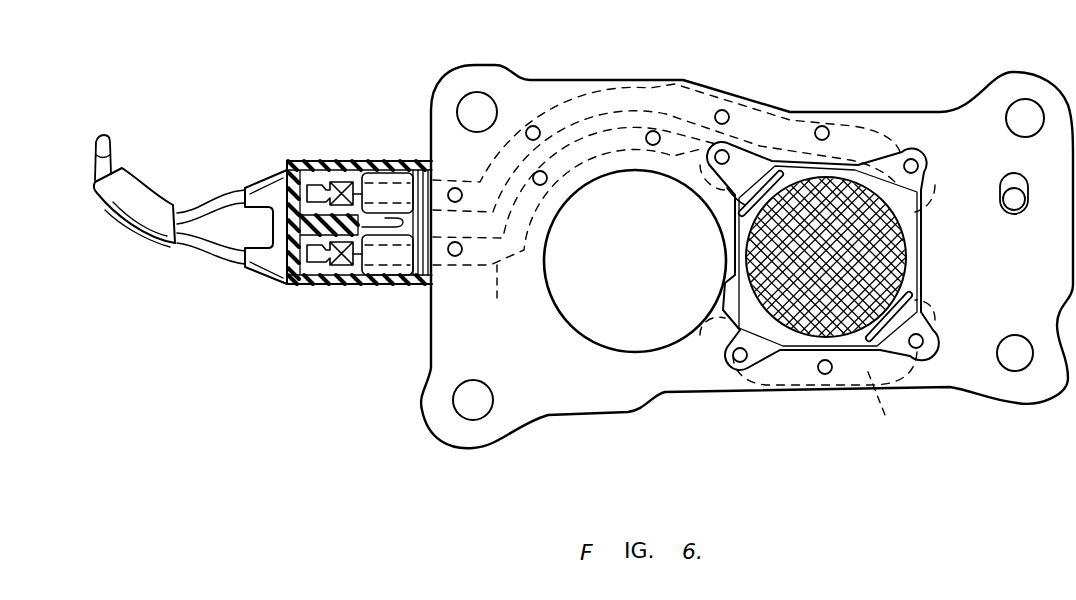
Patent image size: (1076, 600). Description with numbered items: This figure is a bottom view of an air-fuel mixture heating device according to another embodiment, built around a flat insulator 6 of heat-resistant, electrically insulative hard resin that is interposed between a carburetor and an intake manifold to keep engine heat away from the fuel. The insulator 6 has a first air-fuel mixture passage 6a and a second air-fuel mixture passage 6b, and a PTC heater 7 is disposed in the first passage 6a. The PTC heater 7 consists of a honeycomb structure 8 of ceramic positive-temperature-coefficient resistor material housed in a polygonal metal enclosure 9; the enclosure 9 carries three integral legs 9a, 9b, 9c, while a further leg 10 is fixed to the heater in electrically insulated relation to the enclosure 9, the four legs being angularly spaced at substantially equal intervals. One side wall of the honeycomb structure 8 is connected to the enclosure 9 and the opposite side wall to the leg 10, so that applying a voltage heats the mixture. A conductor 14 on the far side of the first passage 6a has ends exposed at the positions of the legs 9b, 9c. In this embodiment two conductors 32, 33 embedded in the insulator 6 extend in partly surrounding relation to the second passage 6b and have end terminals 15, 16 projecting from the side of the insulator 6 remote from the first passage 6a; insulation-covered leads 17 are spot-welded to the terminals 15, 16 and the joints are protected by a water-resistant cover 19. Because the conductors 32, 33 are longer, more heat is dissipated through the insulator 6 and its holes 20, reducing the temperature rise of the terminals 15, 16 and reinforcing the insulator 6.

The insulator 6 is at (942, 72).
The first air-fuel mixture passage 6a is at (885, 222).
The second air-fuel mixture passage 6b is at (630, 330).
The PTC heater 7 is at (926, 279).
The honeycomb structure 8 is at (880, 250).
The enclosure 9 is at (733, 258).
The leg 9a is at (922, 158).
The leg 9b is at (921, 336).
The leg 9c is at (735, 347).
The leg 10 is at (726, 190).
The conductor 14 is at (888, 408).
The terminal 15 is at (350, 266).
The terminal 16 is at (353, 182).
The insulation-covered lead 17 is at (216, 190).
The water-resistant cover 19 is at (292, 160).
The aperture 20 is at (724, 111).
The conductor 32 is at (498, 296).
The conductor 33 is at (598, 100).